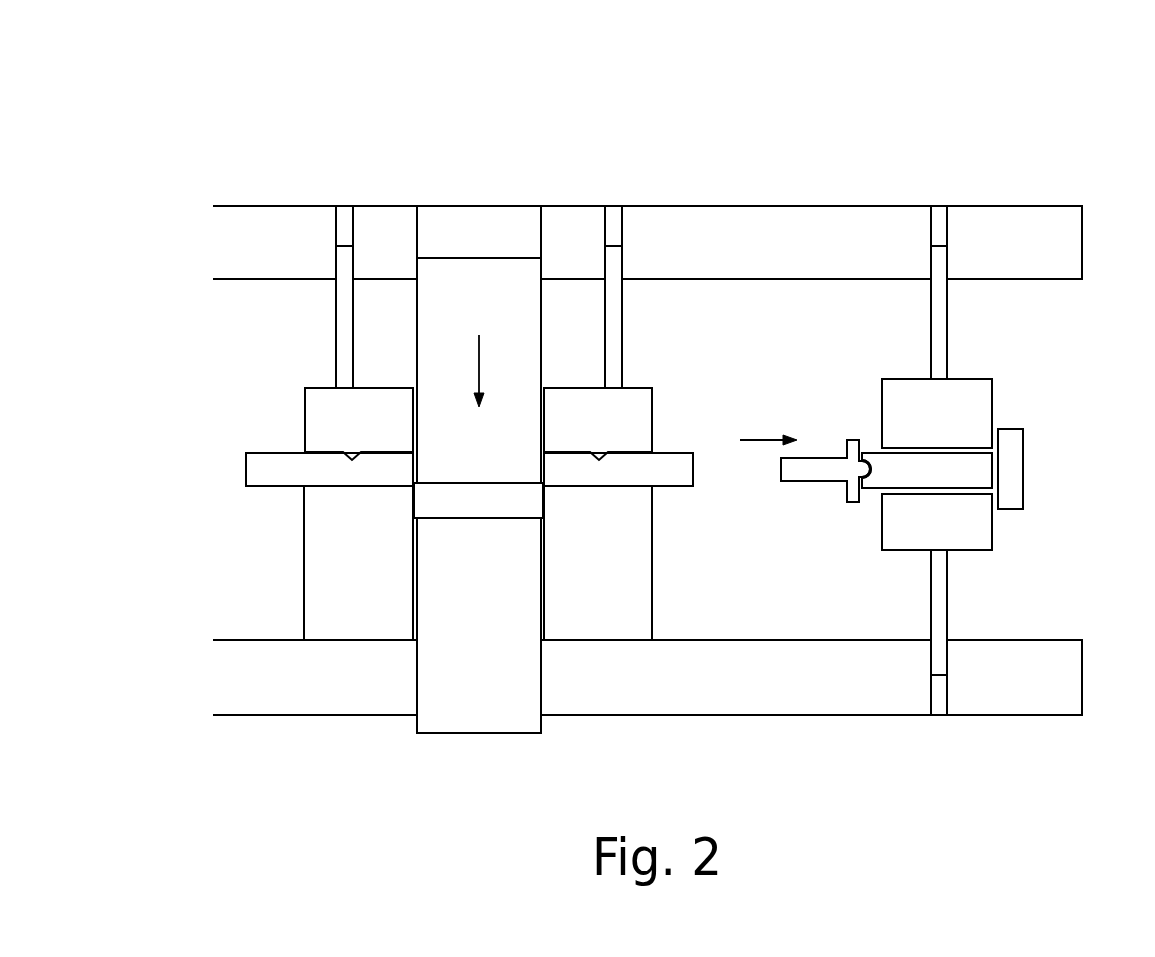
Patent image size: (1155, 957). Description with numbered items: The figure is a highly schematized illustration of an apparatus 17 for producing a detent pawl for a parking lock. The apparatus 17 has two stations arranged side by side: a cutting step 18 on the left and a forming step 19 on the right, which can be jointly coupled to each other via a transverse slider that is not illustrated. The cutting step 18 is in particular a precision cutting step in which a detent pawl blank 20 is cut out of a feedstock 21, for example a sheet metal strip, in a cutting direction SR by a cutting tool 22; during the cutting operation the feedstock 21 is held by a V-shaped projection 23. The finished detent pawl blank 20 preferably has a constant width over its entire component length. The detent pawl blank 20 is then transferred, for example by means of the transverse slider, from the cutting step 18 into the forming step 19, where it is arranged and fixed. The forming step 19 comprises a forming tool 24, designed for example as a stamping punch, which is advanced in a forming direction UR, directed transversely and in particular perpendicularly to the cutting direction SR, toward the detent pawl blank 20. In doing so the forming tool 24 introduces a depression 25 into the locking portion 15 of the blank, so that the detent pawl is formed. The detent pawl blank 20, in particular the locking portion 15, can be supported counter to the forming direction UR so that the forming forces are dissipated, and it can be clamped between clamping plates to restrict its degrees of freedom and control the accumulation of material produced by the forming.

The apparatus 17 is at (143, 140).
The cutting step 18 is at (723, 178).
The forming step 19 is at (1093, 178).
The detent pawl blank 20 is at (460, 500).
The feedstock 21 is at (262, 469).
The cutting tool 22 is at (448, 332).
The V-shaped projection 23 is at (352, 456).
The forming tool 24 is at (807, 468).
The depression 25 is at (873, 480).
The locking portion 15 is at (878, 462).